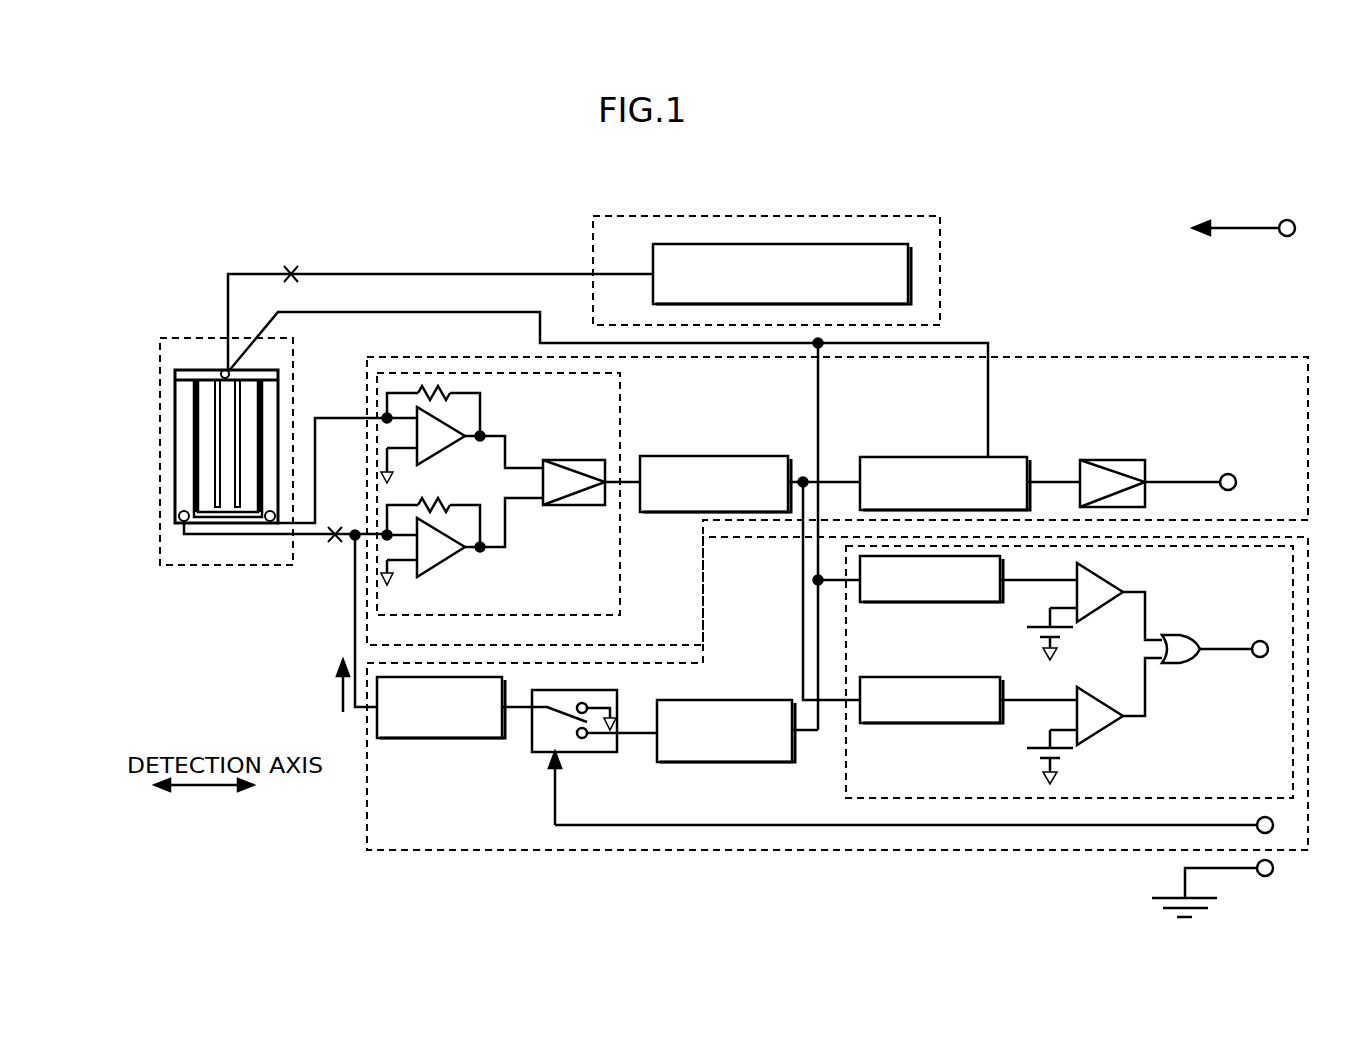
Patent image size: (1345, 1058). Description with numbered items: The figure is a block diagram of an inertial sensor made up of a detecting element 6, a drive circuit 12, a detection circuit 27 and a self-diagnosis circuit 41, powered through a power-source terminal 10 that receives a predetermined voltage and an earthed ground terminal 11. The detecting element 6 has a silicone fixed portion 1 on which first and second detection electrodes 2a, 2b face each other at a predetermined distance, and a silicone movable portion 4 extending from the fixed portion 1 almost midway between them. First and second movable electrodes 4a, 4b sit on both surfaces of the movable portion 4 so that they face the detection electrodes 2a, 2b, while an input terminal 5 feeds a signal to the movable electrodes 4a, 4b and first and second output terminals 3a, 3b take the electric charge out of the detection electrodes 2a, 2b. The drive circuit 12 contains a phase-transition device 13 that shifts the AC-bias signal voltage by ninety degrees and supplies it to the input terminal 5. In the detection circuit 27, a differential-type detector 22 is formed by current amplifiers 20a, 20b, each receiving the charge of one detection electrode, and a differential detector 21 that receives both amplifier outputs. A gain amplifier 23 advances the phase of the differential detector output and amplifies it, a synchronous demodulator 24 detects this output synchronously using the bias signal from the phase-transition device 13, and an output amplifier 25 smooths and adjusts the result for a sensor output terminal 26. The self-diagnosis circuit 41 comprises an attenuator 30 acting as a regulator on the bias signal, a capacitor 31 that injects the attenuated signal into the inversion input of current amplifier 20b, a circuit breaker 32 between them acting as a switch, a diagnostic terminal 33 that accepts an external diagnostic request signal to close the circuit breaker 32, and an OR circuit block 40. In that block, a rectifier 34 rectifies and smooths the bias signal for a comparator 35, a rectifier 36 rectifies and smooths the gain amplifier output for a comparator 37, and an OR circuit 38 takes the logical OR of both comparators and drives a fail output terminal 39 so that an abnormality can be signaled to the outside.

The fixed portion 1 is at (275, 402).
The first detection electrode 2a is at (198, 478).
The second detection electrode 2b is at (258, 420).
The first output terminal 3a is at (183, 522).
The second output terminal 3b is at (270, 530).
The movable portion 4 is at (228, 520).
The first movable electrode 4a is at (218, 448).
The second movable electrode 4b is at (232, 395).
The input terminal 5 is at (224, 368).
The detecting element 6 is at (178, 338).
The power-source terminal 10 is at (1282, 222).
The ground terminal 11 is at (1273, 870).
The drive circuit 12 is at (645, 216).
The phase-transition device 13 is at (888, 244).
The current amplifier 20a is at (447, 452).
The current amplifier 20b is at (447, 563).
The differential detector 21 is at (568, 460).
The differential-type detector 22 is at (503, 372).
The gain amplifier 23 is at (755, 456).
The synchronous demodulator 24 is at (1005, 457).
The output amplifier 25 is at (1125, 460).
The sensor output terminal 26 is at (1232, 474).
The detection circuit 27 is at (1098, 357).
The attenuator 30 is at (740, 700).
The capacitor 31 is at (410, 738).
The circuit breaker 32 is at (588, 752).
The diagnostic terminal 33 is at (1265, 815).
The rectifier 34 is at (975, 602).
The comparator 35 is at (1110, 570).
The rectifier 36 is at (878, 723).
The comparator 37 is at (1110, 738).
The OR circuit 38 is at (1178, 663).
The fail output terminal 39 is at (1262, 640).
The OR circuit block 40 is at (995, 798).
The self-diagnosis circuit 41 is at (533, 850).